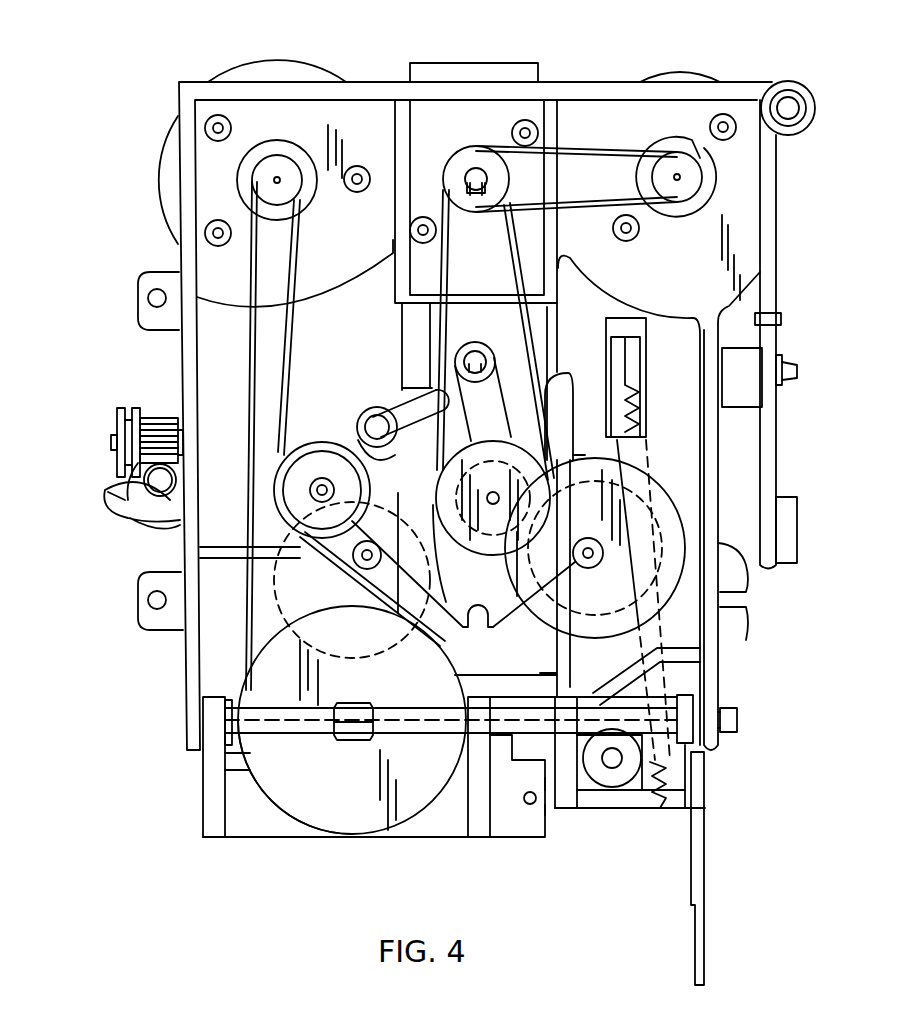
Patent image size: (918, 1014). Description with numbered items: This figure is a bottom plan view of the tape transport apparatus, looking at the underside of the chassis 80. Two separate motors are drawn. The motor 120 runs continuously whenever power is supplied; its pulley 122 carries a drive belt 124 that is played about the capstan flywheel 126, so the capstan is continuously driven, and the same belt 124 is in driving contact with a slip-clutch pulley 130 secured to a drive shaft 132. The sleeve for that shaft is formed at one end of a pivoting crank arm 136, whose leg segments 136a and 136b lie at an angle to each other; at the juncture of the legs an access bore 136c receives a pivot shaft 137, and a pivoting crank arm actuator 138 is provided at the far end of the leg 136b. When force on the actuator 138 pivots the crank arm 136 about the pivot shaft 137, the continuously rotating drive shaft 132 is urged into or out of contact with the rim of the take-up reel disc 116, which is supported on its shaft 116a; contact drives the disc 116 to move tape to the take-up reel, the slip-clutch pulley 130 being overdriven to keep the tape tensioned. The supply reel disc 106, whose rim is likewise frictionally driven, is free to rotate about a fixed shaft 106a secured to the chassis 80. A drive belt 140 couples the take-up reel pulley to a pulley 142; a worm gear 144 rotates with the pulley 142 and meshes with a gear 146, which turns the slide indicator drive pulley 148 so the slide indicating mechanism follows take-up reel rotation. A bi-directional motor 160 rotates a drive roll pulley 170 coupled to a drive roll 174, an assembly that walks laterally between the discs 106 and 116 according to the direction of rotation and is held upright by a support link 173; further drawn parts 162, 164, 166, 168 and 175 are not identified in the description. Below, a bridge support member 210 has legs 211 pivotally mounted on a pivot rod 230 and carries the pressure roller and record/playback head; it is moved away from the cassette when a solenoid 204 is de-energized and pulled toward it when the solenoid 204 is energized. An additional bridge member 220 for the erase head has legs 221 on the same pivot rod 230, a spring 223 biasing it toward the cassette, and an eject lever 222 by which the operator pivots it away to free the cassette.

The chassis 80 is at (780, 74).
The supply reel disc 106 is at (666, 490).
The fixed shaft 106a is at (600, 560).
The take-up reel disc 116 is at (250, 596).
The shaft 116a is at (300, 598).
The motor 120 is at (284, 63).
The pulley 122 is at (282, 166).
The drive belt 124 is at (358, 608).
The capstan flywheel 126 is at (284, 794).
The slip-clutch pulley 130 is at (320, 450).
The drive shaft 132 is at (340, 478).
The pivoting crank arm 136 is at (369, 401).
The leg segment 136a is at (358, 440).
The leg segment 136b is at (410, 392).
The access bore 136c is at (398, 433).
The pivot shaft 137 is at (309, 481).
The pivoting crank arm actuator 138 is at (550, 372).
The drive belt 140 is at (170, 526).
The pulley 142 is at (128, 506).
The worm gear 144 is at (144, 488).
The gear 146 is at (158, 416).
The slide indicator drive pulley 148 is at (117, 440).
The bi-directional motor 160 is at (680, 72).
The pulley 162 is at (690, 140).
The belt 164 is at (620, 148).
The pulley 166 is at (468, 152).
The belt 168 is at (452, 265).
The drive roll pulley 170 is at (462, 552).
The support link 173 is at (470, 445).
The drive roll 174 is at (574, 462).
The roller 175 is at (477, 342).
The solenoid 204 is at (522, 64).
The bridge support member 210 is at (268, 851).
The legs 211 is at (230, 720).
The bridge member 220 is at (618, 820).
The legs 221 is at (700, 705).
The eject lever 222 is at (705, 878).
The spring 223 is at (657, 805).
The pivot rod 230 is at (737, 724).